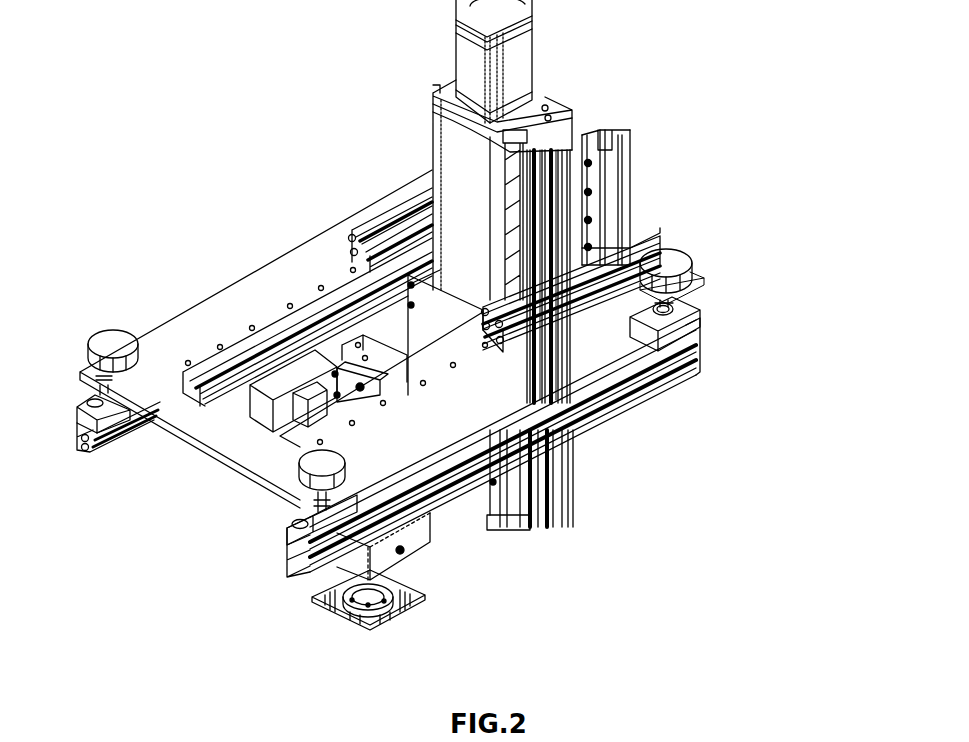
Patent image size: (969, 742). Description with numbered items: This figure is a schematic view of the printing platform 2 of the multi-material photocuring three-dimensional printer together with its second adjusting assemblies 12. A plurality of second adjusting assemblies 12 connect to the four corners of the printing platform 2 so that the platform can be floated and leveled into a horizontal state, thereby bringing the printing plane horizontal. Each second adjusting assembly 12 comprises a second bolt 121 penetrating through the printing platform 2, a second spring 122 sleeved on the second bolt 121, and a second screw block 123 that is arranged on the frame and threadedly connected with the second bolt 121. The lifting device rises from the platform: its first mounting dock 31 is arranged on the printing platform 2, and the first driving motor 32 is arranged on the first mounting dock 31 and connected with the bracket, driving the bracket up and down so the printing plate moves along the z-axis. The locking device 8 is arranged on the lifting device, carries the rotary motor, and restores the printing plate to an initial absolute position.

The printing platform 2 is at (497, 367).
The locking device 8 is at (480, 507).
The second adjusting assembly 12 is at (432, 507).
The first mounting dock 31 is at (657, 228).
The first driving motor 32 is at (547, 245).
The second bolt 121 is at (688, 262).
The second spring 122 is at (693, 305).
The second screw block 123 is at (695, 347).